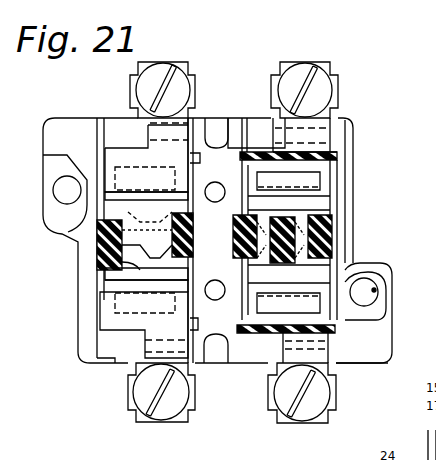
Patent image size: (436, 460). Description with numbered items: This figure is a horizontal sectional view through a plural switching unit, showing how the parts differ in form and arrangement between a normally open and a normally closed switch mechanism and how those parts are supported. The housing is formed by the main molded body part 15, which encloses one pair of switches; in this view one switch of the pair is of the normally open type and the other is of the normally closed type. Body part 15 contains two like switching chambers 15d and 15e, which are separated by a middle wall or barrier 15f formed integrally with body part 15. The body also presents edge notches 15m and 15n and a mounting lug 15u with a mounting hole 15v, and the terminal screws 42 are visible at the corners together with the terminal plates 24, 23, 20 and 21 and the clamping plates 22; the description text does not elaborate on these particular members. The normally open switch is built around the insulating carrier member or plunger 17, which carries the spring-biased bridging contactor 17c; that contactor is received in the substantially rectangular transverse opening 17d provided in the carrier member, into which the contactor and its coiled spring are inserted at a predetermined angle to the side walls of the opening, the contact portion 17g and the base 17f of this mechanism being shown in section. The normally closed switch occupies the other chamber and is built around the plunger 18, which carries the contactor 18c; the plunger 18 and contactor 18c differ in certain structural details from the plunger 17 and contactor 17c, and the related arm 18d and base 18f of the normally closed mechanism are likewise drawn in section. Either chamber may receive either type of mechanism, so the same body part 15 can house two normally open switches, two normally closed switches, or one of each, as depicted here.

The main molded body part 15 is at (240, 135).
The notch in body 15m is at (214, 134).
The notch in body 15n is at (226, 356).
The switching chamber 15d is at (196, 195).
The switching chamber 15e is at (246, 330).
The middle wall 15f is at (214, 250).
The mounting lug 15u is at (376, 277).
The mounting hole 15v is at (376, 290).
The terminal screw 42 is at (160, 72).
The terminal plate 24 is at (153, 152).
The terminal plate 23 is at (120, 322).
The terminal plate 20 is at (320, 128).
The terminal plate 21 is at (320, 353).
The clamping plate 22 is at (333, 156).
The contactor-actuating plunger 17 is at (104, 256).
The bridging contactor 17c is at (184, 208).
The transverse opening 17d is at (100, 243).
The contact portion 17g is at (106, 262).
The contact base 17f is at (110, 280).
The contactor-actuating plunger 18 is at (308, 216).
The bridging contactor 18c is at (300, 203).
The contact arm 18d is at (305, 226).
The contact base 18f is at (292, 242).